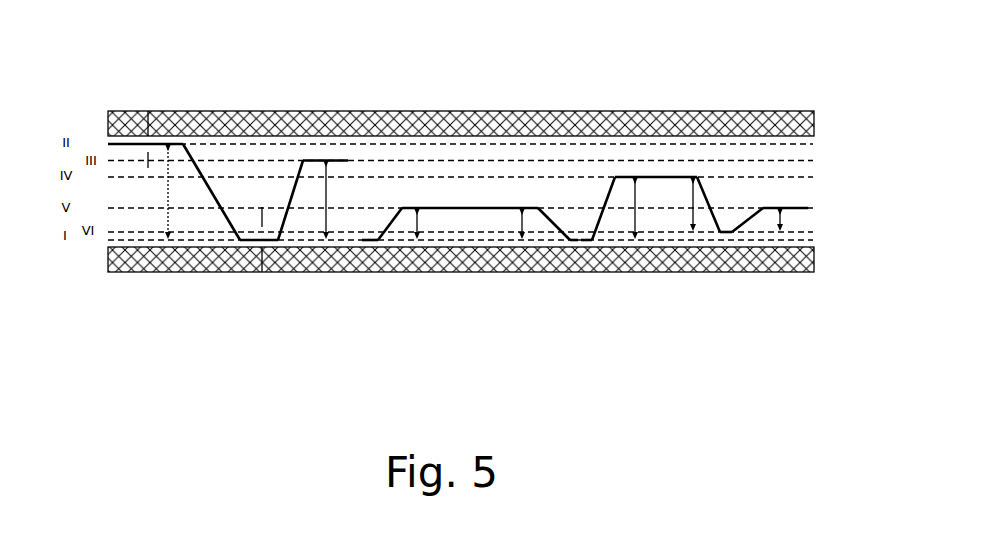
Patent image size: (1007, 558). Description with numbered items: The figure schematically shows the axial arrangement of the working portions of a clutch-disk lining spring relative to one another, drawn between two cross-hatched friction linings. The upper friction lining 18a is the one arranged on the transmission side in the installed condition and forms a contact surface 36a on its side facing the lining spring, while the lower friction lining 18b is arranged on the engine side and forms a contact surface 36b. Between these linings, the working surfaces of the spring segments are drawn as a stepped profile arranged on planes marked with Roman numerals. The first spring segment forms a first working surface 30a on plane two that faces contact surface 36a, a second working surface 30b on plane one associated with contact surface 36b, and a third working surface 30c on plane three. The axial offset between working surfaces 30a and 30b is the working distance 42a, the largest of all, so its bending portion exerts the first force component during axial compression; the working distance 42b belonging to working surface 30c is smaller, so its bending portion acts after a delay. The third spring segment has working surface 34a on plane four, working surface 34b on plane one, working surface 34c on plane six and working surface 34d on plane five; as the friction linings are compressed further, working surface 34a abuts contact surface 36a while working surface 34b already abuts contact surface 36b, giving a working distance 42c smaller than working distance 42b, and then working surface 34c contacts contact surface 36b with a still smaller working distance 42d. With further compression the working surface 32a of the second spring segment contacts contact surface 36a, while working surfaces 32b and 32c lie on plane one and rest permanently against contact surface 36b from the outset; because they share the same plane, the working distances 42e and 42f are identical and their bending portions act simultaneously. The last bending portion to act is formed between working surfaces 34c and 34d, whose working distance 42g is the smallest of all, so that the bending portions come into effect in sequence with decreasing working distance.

The friction lining 18a is at (635, 110).
The friction lining 18b is at (753, 273).
The first working surface 30a is at (135, 146).
The second working surface 30b is at (248, 243).
The third working surface 30c is at (338, 158).
The working surface 32a is at (452, 207).
The working surface 32b is at (362, 243).
The working surface 32c is at (570, 243).
The working surface 34a is at (660, 180).
The working surface 34b is at (583, 243).
The working surface 34c is at (730, 235).
The working surface 34d is at (785, 210).
The contact surface 36a is at (778, 137).
The contact surface 36b is at (788, 245).
The working distance 42a is at (167, 188).
The working distance 42b is at (310, 232).
The working distance 42c is at (633, 210).
The working distance 42d is at (690, 205).
The working distance 42e is at (420, 225).
The working distance 42f is at (522, 225).
The working distance 42g is at (770, 228).